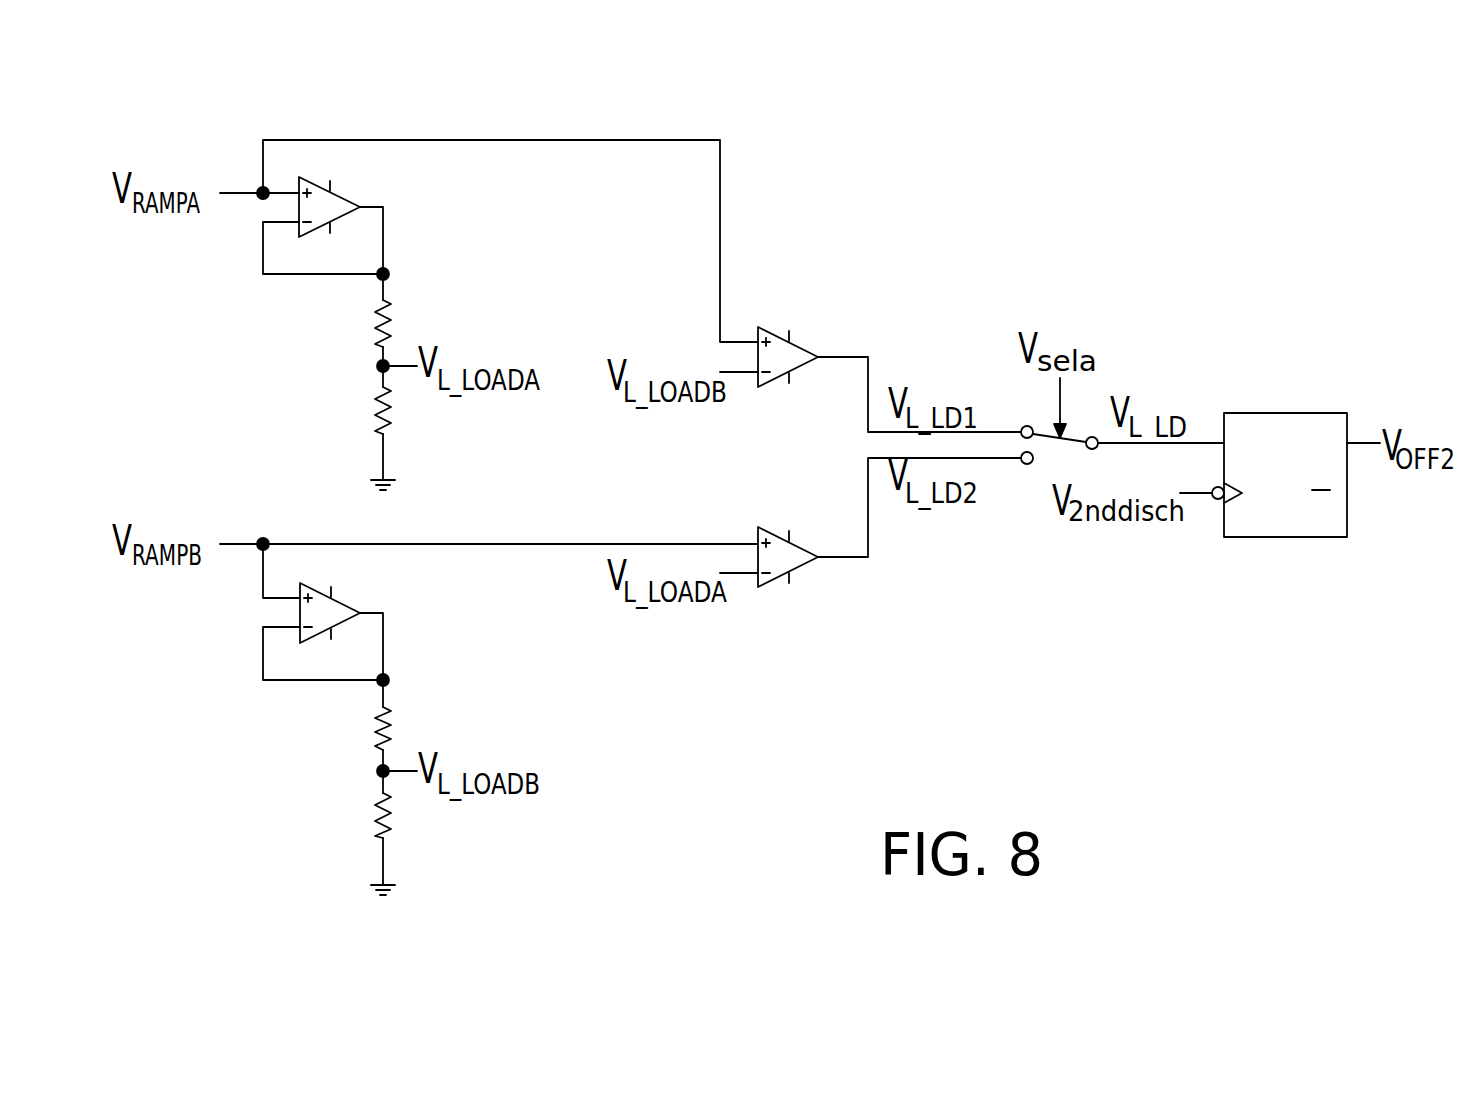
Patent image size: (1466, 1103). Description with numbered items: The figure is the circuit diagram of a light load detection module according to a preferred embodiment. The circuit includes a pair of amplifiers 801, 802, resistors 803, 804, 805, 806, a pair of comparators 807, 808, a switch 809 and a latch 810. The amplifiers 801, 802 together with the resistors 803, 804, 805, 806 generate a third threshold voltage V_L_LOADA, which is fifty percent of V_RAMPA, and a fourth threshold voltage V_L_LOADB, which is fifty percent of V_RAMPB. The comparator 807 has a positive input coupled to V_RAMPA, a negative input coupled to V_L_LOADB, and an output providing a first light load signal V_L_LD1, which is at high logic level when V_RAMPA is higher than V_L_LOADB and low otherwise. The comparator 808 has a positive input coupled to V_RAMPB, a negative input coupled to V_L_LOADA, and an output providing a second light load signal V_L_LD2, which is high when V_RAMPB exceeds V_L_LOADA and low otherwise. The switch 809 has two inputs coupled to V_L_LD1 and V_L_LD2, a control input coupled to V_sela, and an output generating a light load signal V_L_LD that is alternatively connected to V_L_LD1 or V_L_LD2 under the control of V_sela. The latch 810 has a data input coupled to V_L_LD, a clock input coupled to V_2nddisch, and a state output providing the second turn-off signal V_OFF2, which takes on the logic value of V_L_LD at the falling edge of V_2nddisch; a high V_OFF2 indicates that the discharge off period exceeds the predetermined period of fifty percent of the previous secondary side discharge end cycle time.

The amplifier 801 is at (308, 231).
The amplifier 802 is at (310, 640).
The resistor 803 is at (397, 316).
The resistor 804 is at (400, 410).
The resistor 805 is at (400, 722).
The resistor 806 is at (400, 815).
The comparator 807 is at (772, 330).
The comparator 808 is at (800, 567).
The switch 809 is at (1045, 452).
The latch 810 is at (1293, 413).